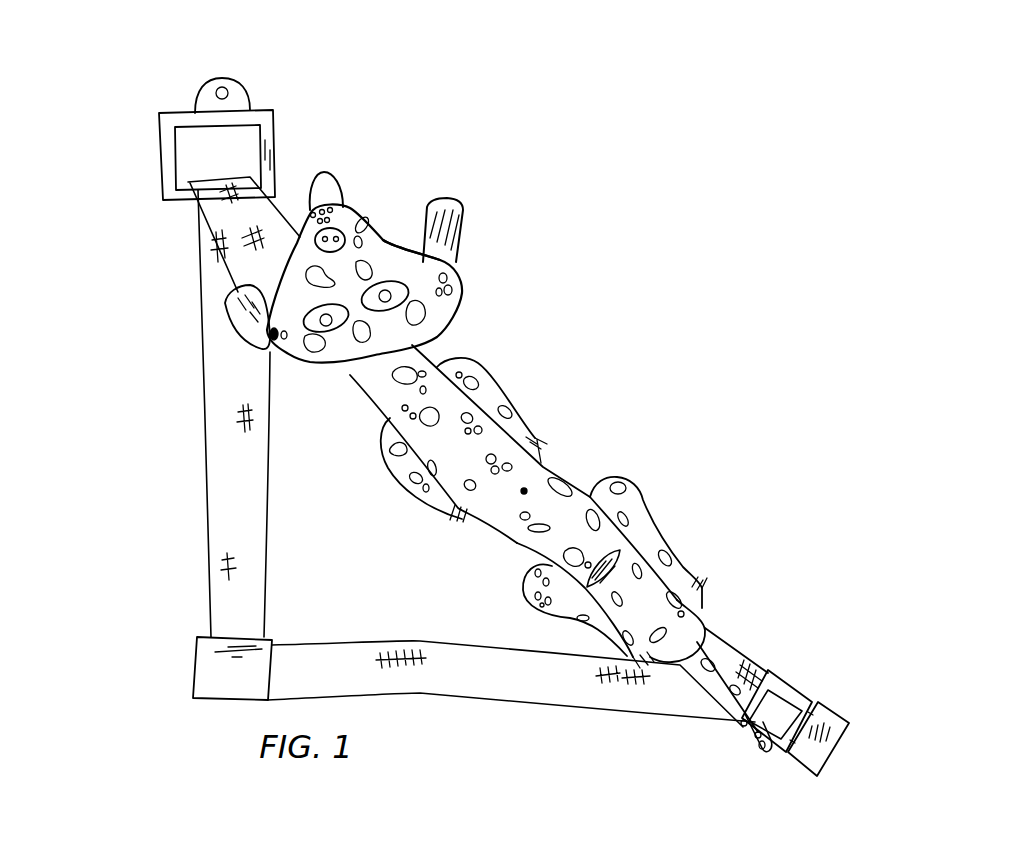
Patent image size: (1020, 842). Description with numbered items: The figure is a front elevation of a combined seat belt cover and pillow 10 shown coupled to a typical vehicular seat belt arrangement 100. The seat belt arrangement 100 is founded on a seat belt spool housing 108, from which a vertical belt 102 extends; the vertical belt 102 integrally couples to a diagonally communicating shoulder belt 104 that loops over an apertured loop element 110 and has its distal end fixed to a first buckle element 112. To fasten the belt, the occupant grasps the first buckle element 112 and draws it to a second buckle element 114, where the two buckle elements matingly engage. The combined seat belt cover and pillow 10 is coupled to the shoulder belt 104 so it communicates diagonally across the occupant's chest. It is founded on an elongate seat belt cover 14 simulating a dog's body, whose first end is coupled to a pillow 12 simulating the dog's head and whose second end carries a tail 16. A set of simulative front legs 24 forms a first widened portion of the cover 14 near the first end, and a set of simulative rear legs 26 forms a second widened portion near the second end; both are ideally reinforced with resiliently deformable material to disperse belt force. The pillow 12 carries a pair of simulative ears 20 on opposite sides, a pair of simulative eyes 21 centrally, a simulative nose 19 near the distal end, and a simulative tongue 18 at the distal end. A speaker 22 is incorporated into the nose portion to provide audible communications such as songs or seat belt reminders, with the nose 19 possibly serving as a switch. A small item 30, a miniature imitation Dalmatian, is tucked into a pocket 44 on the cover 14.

The combined seat belt cover and pillow 10 is at (576, 370).
The pillow 12 is at (367, 222).
The elongate seat belt cover 14 is at (540, 467).
The tail 16 is at (748, 663).
The simulative tongue 18 is at (320, 172).
The simulative nose 19 is at (397, 222).
The simulative ears 20 is at (450, 200).
The simulative eyes 21 is at (332, 333).
The speaker 22 is at (345, 215).
The simulative front legs 24 is at (478, 362).
The simulative rear legs 26 is at (623, 490).
The small item 30 is at (513, 538).
The pocket 44 is at (590, 557).
The seat belt arrangement 100 is at (172, 314).
The vertical belt 102 is at (203, 248).
The shoulder belt 104 is at (290, 222).
The seat belt spool housing 108 is at (193, 673).
The apertured loop element 110 is at (160, 155).
The first buckle element 112 is at (806, 687).
The second buckle element 114 is at (813, 768).